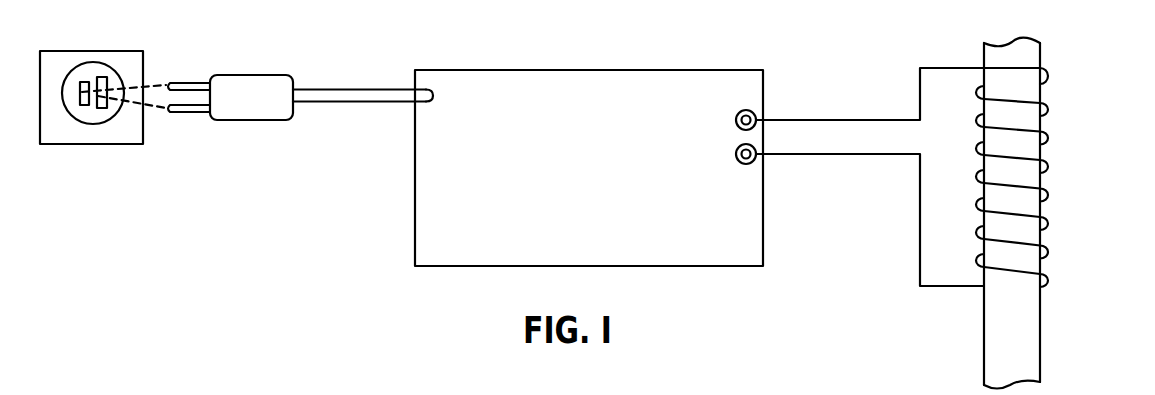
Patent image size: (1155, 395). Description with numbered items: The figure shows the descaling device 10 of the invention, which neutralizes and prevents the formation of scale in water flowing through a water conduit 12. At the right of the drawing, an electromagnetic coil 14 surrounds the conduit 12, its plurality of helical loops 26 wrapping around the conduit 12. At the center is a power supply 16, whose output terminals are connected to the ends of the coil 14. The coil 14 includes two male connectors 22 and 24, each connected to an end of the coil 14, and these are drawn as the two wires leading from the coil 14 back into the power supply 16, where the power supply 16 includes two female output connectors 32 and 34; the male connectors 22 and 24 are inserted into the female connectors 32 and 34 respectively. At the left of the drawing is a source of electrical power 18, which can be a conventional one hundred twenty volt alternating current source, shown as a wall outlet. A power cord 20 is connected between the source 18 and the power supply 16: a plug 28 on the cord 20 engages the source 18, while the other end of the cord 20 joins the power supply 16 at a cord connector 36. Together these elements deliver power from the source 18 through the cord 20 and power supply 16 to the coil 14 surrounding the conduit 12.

The descaling device 10 is at (275, 242).
The water conduit 12 is at (1027, 322).
The electromagnetic coil 14 is at (820, 119).
The power supply 16 is at (592, 267).
The source of electrical power 18 is at (60, 145).
The power cord 20 is at (314, 102).
The male connector 22 is at (754, 113).
The male connector 24 is at (754, 162).
The helical loops 26 is at (1049, 108).
The plug 28 is at (233, 74).
The female output connector 32 is at (736, 117).
The female output connector 34 is at (736, 153).
The cord connector 36 is at (433, 92).